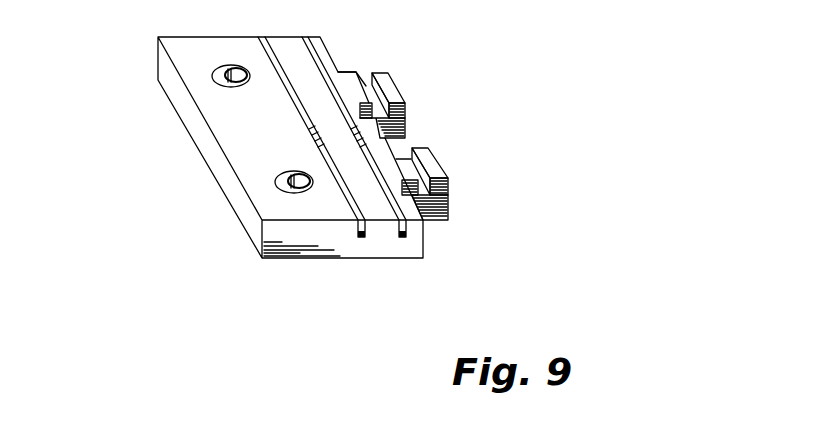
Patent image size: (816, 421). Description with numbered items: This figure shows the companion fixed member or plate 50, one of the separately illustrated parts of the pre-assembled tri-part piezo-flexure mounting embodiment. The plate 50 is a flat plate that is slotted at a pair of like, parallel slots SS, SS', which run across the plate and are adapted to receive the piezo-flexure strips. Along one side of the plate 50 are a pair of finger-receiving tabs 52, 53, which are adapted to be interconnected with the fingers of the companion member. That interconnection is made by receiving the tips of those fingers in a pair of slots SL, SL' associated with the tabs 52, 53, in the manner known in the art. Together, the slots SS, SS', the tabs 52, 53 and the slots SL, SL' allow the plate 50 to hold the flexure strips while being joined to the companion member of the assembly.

The fixed member or plate 50 is at (319, 173).
The slot SS is at (311, 172).
The slot SS' is at (357, 186).
The slot SL is at (396, 49).
The slot SL' is at (458, 125).
The finger-receiving tab 52 is at (405, 103).
The finger-receiving tab 53 is at (448, 178).